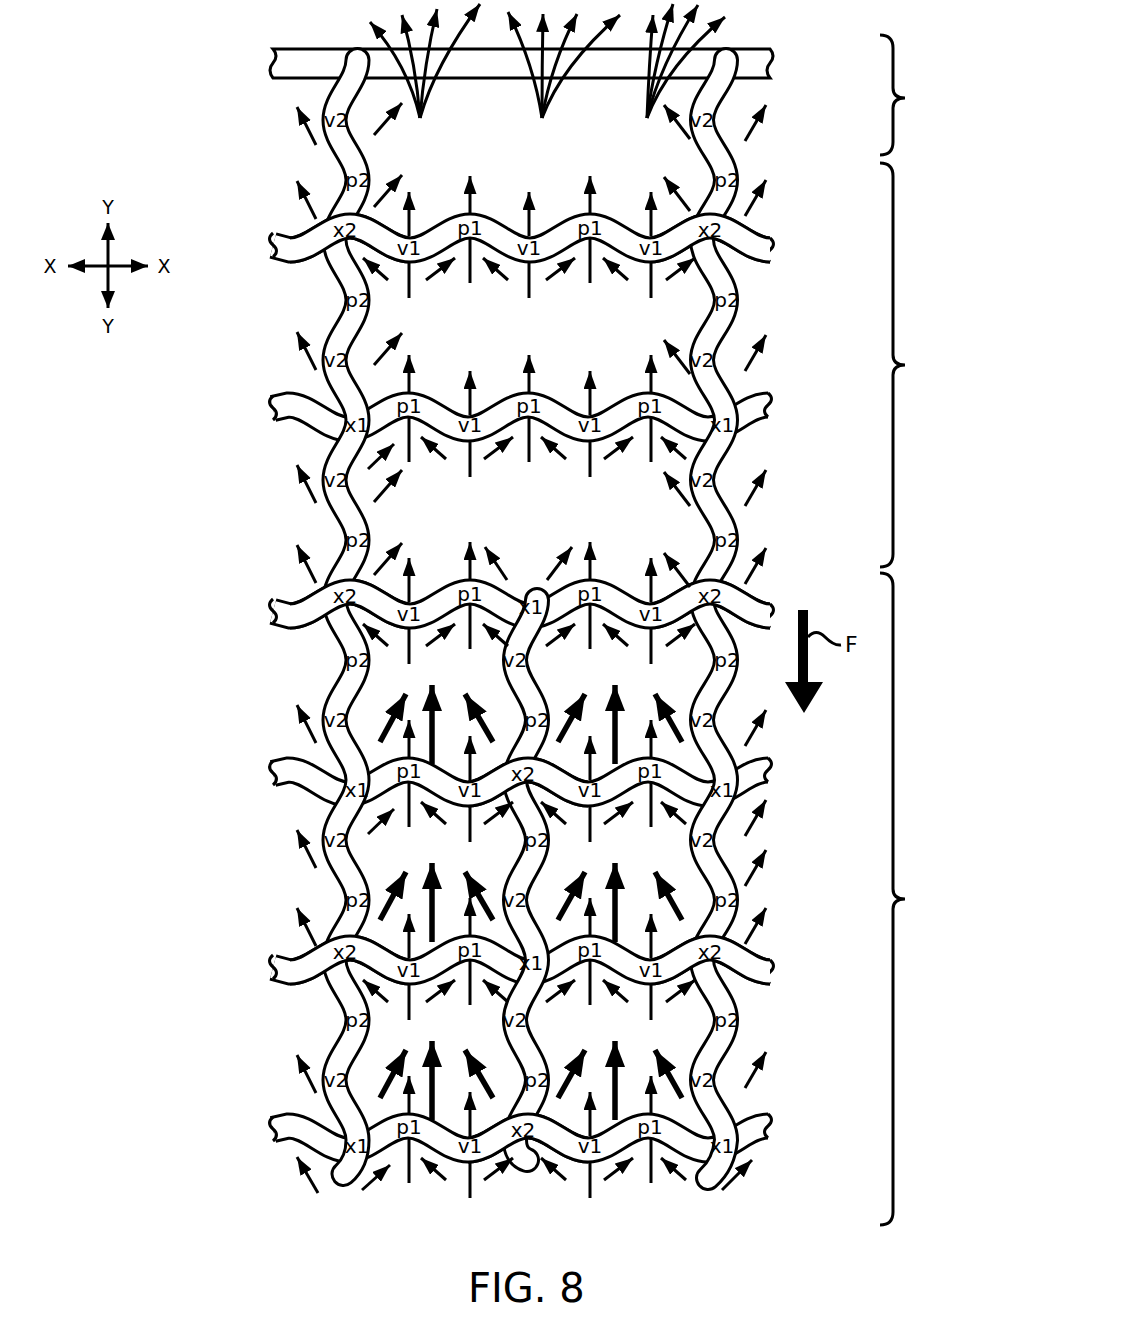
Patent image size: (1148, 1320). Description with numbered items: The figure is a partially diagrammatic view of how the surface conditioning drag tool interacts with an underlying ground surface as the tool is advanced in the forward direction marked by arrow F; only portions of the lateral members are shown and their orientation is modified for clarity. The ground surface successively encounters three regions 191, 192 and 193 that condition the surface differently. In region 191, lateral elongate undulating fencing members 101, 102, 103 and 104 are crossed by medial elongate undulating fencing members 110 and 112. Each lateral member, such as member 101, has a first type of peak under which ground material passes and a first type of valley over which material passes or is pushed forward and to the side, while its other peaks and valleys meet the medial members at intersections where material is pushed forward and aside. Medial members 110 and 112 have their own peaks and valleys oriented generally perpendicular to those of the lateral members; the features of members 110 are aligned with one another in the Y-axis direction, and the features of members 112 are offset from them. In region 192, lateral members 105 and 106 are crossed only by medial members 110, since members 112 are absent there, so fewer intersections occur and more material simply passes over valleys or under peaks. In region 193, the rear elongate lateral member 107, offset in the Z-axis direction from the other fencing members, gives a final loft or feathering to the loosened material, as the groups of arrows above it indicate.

The lateral elongate undulating fencing member 101 is at (287, 1142).
The lateral elongate undulating fencing member 102 is at (287, 982).
The lateral elongate undulating fencing member 103 is at (287, 787).
The lateral elongate undulating fencing member 104 is at (287, 630).
The lateral elongate undulating fencing member 105 is at (287, 422).
The lateral elongate undulating fencing member 106 is at (287, 262).
The rear elongate lateral member 107 is at (287, 77).
The medial elongate undulating fencing member 110 is at (708, 1222).
The medial elongate undulating fencing member 112 is at (511, 1164).
The region 191 is at (918, 899).
The region 192 is at (918, 365).
The region 193 is at (918, 95).